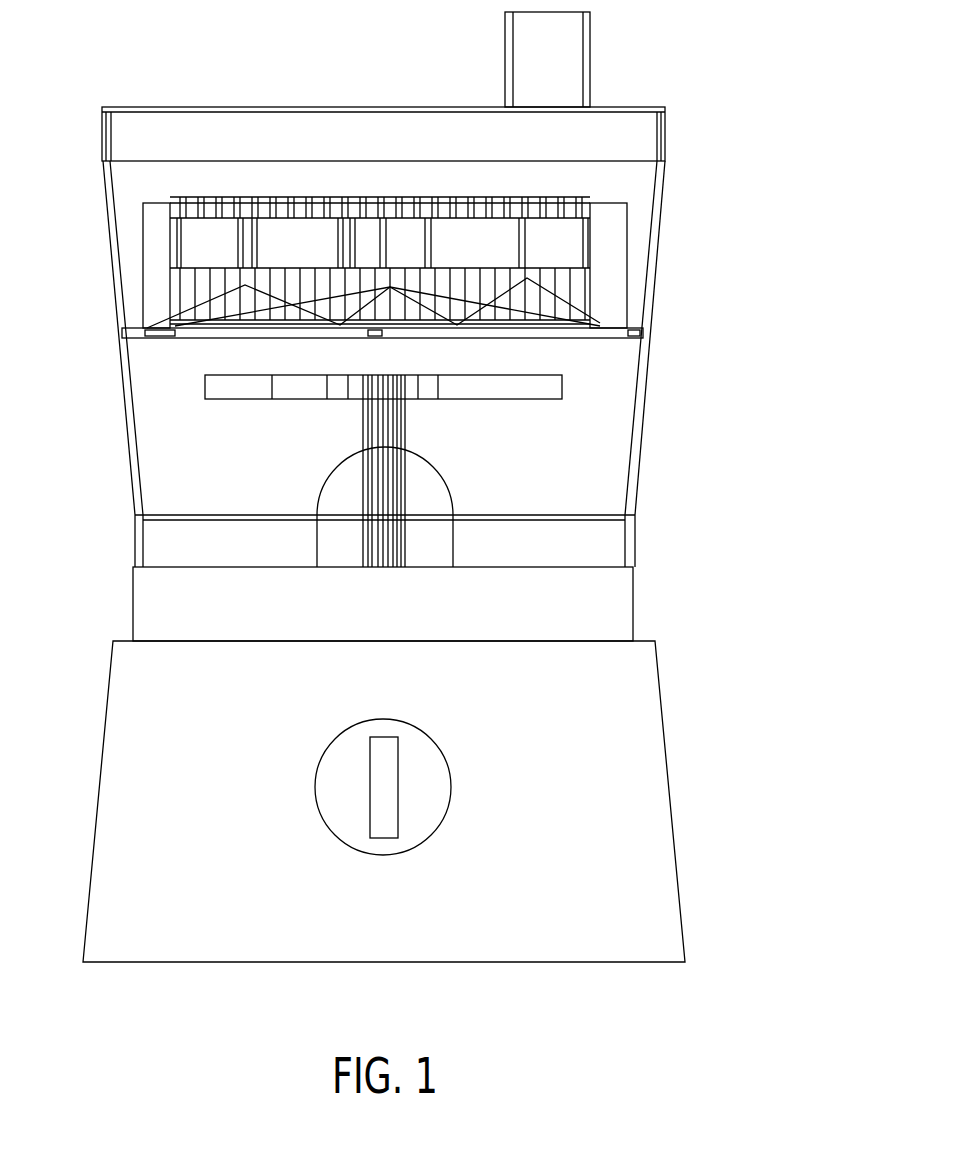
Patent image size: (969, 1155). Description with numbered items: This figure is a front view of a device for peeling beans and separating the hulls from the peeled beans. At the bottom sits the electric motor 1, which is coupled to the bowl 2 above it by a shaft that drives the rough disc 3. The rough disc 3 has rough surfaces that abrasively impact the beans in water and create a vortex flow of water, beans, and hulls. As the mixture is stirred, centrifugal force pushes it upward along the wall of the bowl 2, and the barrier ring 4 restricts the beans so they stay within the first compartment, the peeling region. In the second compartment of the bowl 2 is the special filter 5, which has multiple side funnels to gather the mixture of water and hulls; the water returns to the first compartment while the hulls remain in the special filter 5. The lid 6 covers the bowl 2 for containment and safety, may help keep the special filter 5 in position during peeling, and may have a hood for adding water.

The electric motor 1 is at (626, 780).
The bowl 2 is at (632, 503).
The rough disc 3 is at (543, 385).
The barrier ring 4 is at (635, 322).
The special filter 5 is at (606, 238).
The lid 6 is at (606, 106).